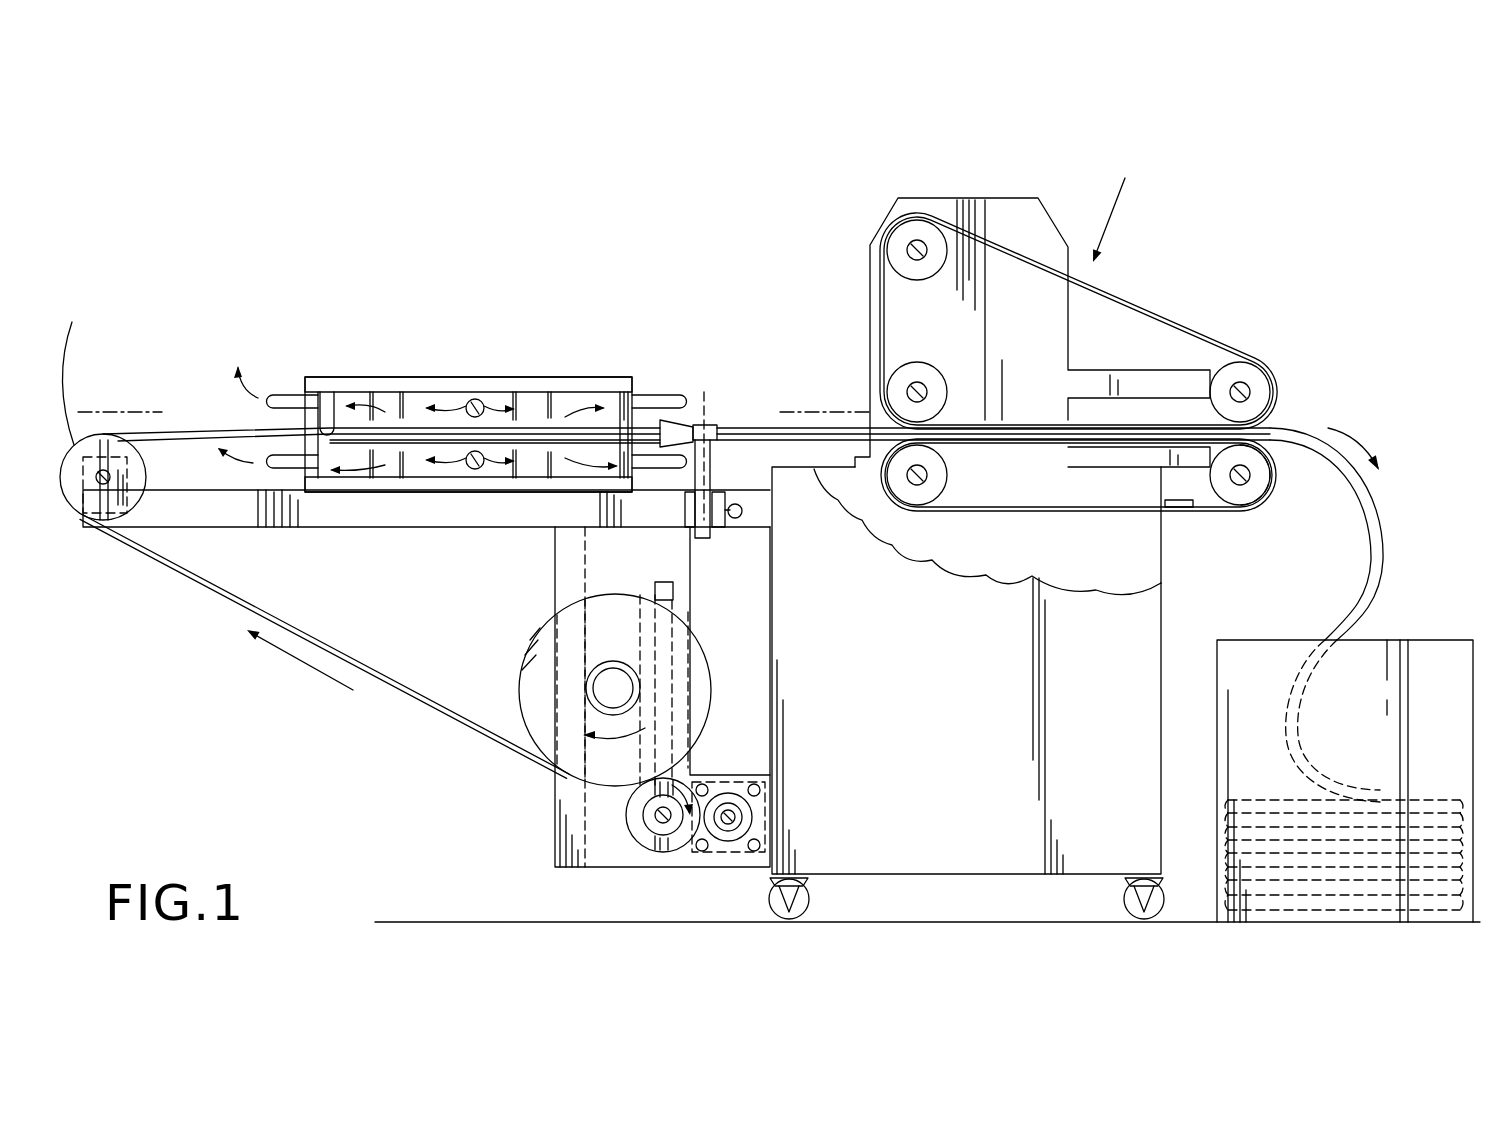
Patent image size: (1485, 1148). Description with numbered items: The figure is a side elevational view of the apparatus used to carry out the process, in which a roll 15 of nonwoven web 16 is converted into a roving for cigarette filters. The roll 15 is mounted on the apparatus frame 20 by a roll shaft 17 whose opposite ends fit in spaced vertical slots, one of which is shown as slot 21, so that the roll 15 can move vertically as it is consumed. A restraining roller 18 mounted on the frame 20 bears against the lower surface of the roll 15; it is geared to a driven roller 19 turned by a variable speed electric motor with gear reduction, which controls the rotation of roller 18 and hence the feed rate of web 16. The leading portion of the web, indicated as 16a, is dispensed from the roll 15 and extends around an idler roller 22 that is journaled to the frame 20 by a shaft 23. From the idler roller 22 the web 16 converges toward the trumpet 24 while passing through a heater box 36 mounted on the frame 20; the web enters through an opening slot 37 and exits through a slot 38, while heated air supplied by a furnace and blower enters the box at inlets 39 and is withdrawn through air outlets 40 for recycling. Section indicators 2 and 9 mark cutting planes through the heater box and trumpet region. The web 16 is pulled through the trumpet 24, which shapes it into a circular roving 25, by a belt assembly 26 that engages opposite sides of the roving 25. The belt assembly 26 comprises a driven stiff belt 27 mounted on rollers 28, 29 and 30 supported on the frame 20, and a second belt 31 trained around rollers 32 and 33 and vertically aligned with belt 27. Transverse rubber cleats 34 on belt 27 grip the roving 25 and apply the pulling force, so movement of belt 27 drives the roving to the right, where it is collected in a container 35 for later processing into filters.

The section line 2- 2 is at (97, 408).
The section line 9- 9 is at (704, 392).
The roll 15 is at (540, 738).
The nonwoven web 16 is at (202, 427).
The leading end of web 16a is at (80, 370).
The roll shaft 17 is at (605, 688).
The restraining roller 18 is at (640, 818).
The driven roller 19 is at (730, 800).
The apparatus frame 20 is at (933, 198).
The vertical slot 21 is at (640, 592).
The idler roller 22 is at (120, 508).
The shaft 23 is at (103, 487).
The trumpet 24 is at (675, 432).
The roving 25 is at (800, 432).
The belt assembly 26 is at (1118, 205).
The belt 27 is at (1112, 300).
The roller 28 is at (905, 245).
The roller 29 is at (910, 373).
The roller 30 is at (1250, 380).
The belt 31 is at (1230, 512).
The roller 32 is at (930, 485).
The roller 33 is at (1258, 487).
The transverse rubber cleats 34 is at (1017, 253).
The container 35 is at (1425, 667).
The heater box 36 is at (445, 377).
The opening slot 37 is at (324, 430).
The slot 38 is at (620, 440).
The inlets 39 is at (478, 404).
The air outlets 40 is at (285, 400).